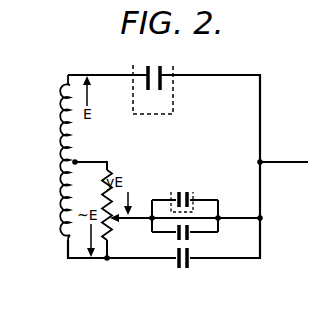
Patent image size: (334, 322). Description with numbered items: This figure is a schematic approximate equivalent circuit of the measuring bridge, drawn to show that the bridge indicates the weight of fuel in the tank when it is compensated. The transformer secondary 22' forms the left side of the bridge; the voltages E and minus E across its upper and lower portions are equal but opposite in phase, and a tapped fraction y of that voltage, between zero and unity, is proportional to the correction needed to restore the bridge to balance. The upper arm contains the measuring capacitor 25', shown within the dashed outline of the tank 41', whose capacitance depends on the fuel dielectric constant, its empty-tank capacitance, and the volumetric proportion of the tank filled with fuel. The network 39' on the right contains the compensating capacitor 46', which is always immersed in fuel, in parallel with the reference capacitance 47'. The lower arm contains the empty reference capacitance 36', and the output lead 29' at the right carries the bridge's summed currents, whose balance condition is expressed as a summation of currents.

The transformer secondary 22' is at (39, 166).
The measuring capacitor 25' is at (183, 72).
The tank 41' is at (172, 89).
The output terminal lead 29' is at (282, 149).
The parallel capacitor network 39' is at (199, 206).
The compensating capacitor 46' is at (192, 186).
The reference capacitance 47' is at (213, 236).
The empty reference capacitance 36' is at (203, 268).